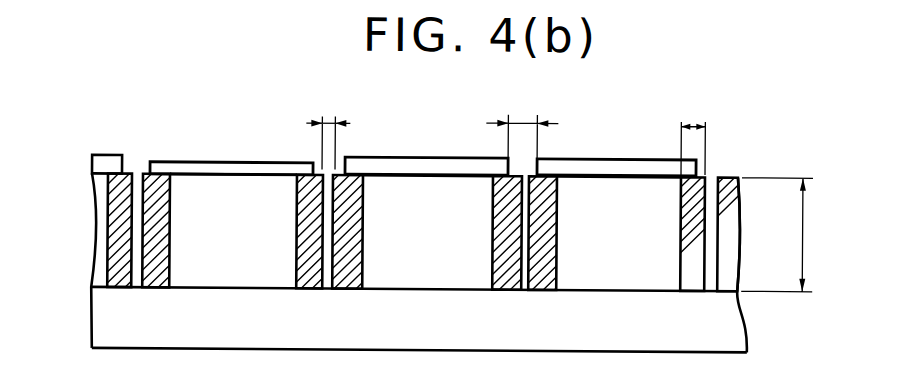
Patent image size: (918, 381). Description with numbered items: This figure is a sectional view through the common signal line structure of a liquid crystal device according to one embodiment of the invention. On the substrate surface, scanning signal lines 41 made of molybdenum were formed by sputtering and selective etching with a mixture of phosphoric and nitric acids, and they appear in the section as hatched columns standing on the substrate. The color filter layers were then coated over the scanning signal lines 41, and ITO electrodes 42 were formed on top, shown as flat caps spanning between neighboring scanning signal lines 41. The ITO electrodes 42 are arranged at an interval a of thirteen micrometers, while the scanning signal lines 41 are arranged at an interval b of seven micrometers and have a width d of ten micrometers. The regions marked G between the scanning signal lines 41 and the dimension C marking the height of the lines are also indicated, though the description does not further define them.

The scanning signal lines 41 is at (122, 288).
The ITO electrodes 42 is at (176, 162).
The gate region G is at (425, 210).
The interval of ITO electrodes a is at (522, 133).
The interval of scanning signal lines b is at (328, 130).
The width of scanning signal lines d is at (693, 134).
The wall height C is at (784, 235).